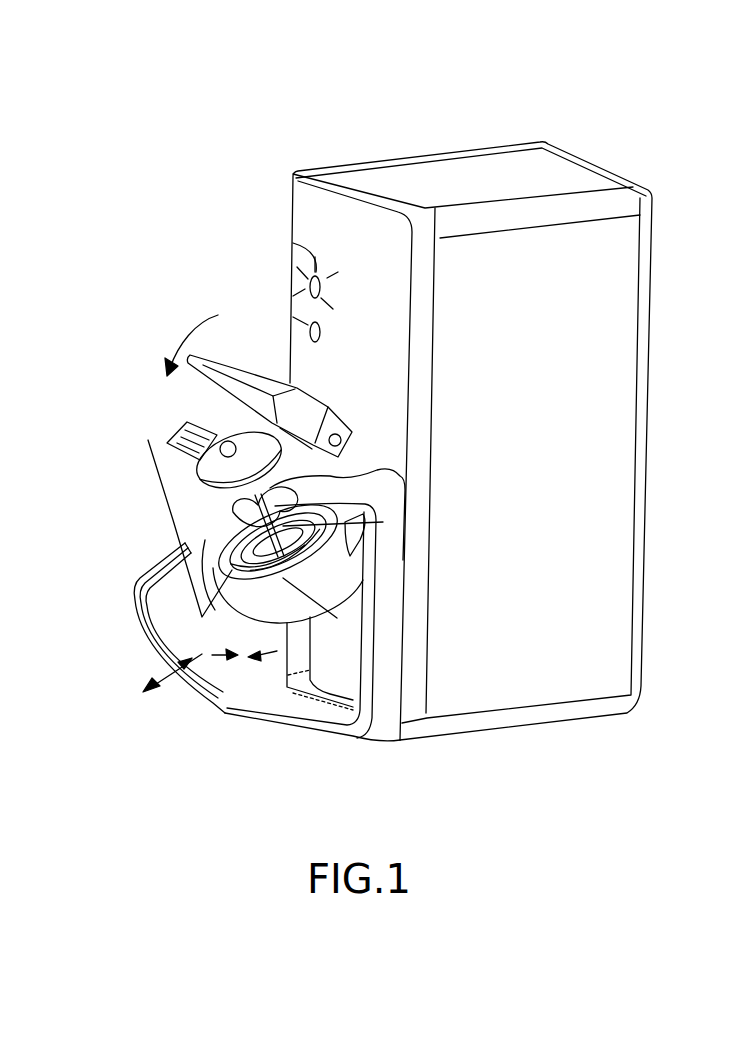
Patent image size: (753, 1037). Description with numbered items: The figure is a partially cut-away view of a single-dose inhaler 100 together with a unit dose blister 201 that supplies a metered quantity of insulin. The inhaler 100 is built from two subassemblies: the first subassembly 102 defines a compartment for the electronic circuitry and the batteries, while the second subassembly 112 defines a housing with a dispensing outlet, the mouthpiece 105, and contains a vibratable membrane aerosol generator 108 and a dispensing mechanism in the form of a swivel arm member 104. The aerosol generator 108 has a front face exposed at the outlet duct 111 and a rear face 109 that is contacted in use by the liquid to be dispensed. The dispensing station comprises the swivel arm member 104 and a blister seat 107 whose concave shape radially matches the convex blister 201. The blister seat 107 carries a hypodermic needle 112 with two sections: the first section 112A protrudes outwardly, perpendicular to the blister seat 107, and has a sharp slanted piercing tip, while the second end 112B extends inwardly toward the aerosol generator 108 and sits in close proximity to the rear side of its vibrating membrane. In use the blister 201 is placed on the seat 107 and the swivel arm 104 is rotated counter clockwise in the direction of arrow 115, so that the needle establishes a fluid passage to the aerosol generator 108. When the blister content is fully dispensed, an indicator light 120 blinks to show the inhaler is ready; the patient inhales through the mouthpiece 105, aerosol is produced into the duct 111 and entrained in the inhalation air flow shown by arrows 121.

The single-dose inhaler 100 is at (398, 84).
The first subassembly 102 is at (648, 194).
The swivel arm member 104 is at (245, 365).
The mouthpiece 105 is at (140, 627).
The blister seat 107 is at (228, 514).
The vibratable membrane aerosol generator 108 is at (175, 658).
The rear face 109 is at (383, 522).
The outlet duct 111 is at (263, 673).
The second subassembly 112 is at (228, 547).
The first section 112A is at (387, 476).
The second end 112B is at (307, 612).
The arrow 115 is at (180, 340).
The indicator light 120 is at (293, 243).
The arrows 121 is at (308, 327).
The unit dose blister 201 is at (167, 433).